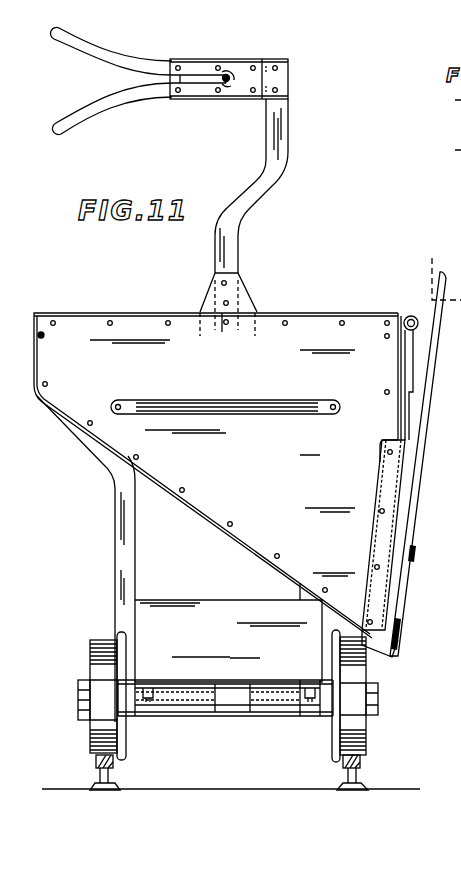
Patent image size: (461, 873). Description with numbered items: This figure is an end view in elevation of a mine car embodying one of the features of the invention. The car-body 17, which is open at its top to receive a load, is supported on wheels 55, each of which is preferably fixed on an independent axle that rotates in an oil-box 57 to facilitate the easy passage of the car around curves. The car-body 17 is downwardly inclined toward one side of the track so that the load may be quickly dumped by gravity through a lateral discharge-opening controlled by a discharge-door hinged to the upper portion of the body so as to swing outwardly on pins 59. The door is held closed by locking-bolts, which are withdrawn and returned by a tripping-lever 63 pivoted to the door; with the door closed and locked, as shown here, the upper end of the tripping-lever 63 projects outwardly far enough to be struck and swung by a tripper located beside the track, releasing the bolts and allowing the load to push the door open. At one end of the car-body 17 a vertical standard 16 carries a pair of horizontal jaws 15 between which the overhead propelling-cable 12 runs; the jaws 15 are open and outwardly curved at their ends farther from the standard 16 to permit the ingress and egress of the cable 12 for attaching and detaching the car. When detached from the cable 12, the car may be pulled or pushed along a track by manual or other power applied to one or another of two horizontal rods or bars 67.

The propelling-cable 12 is at (229, 74).
The jaws 15 is at (111, 80).
The vertical standard 16 is at (230, 197).
The car-body 17 is at (223, 517).
The wheels 55 is at (231, 710).
The oil-box 57 is at (161, 716).
The pins 59 is at (409, 316).
The tripping-lever 63 is at (423, 464).
The horizontal rods or bars 67 is at (240, 375).